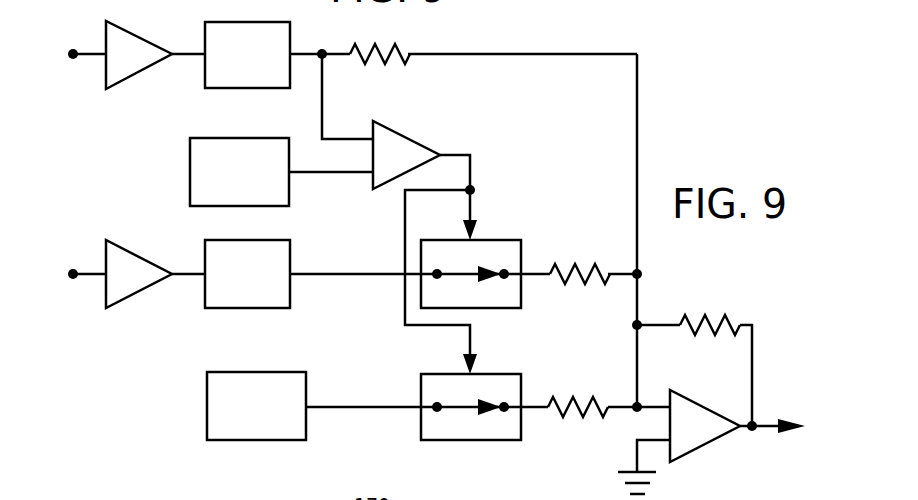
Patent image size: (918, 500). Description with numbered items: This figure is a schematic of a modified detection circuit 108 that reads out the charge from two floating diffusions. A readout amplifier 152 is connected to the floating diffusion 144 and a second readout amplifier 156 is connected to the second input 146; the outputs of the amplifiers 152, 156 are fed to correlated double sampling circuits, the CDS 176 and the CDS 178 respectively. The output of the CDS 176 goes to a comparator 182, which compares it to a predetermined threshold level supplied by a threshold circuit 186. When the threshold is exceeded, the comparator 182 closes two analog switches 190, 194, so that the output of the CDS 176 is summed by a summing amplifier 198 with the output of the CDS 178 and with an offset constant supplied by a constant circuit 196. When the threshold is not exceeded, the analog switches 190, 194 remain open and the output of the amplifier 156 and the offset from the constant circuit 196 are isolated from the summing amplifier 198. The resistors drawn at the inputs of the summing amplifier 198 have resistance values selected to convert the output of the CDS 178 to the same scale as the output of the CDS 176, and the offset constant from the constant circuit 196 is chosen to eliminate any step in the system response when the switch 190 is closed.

The detection circuit 108 is at (600, 24).
The floating diffusion 144 is at (66, 55).
The second input signal 146 is at (66, 275).
The readout amplifier 152 is at (143, 31).
The readout amplifier 156 is at (143, 251).
The CDS 176 is at (237, 22).
The CDS 178 is at (276, 240).
The comparator 182 is at (403, 136).
The threshold circuit 186 is at (236, 138).
The analog switch 190 is at (505, 239).
The analog switch 194 is at (505, 374).
The constant circuit 196 is at (272, 372).
The summing amplifier 198 is at (686, 405).